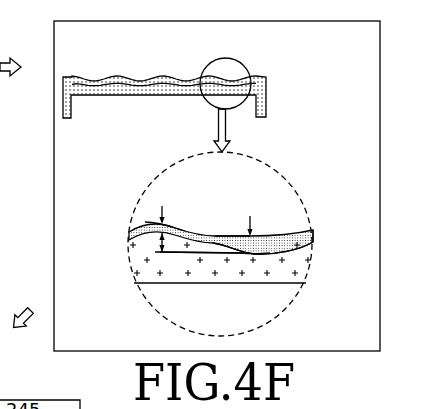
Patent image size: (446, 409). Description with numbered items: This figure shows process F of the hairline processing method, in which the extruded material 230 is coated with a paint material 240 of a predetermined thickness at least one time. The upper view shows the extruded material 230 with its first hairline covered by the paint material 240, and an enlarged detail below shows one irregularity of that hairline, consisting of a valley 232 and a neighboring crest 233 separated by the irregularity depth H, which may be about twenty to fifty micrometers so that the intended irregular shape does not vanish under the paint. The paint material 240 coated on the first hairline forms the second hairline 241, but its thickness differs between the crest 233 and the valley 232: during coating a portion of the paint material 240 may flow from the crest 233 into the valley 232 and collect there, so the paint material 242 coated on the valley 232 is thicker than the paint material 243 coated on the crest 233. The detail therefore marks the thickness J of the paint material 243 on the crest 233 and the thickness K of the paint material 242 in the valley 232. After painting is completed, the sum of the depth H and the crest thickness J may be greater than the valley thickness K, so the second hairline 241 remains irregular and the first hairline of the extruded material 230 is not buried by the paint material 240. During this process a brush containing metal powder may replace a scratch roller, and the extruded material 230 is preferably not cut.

The extruded material 230 is at (269, 82).
The paint material 240 is at (145, 77).
The second hairline 241 is at (288, 234).
The paint material coated on the valley 242 is at (247, 237).
The paint material coated on the crest 243 is at (166, 221).
The valley 232 is at (250, 255).
The crest 233 is at (168, 233).
The thickness of the paint material coated on the crest J is at (162, 206).
The depth of the irregularity H is at (162, 248).
The thickness of the paint material coated on the valley K is at (250, 216).